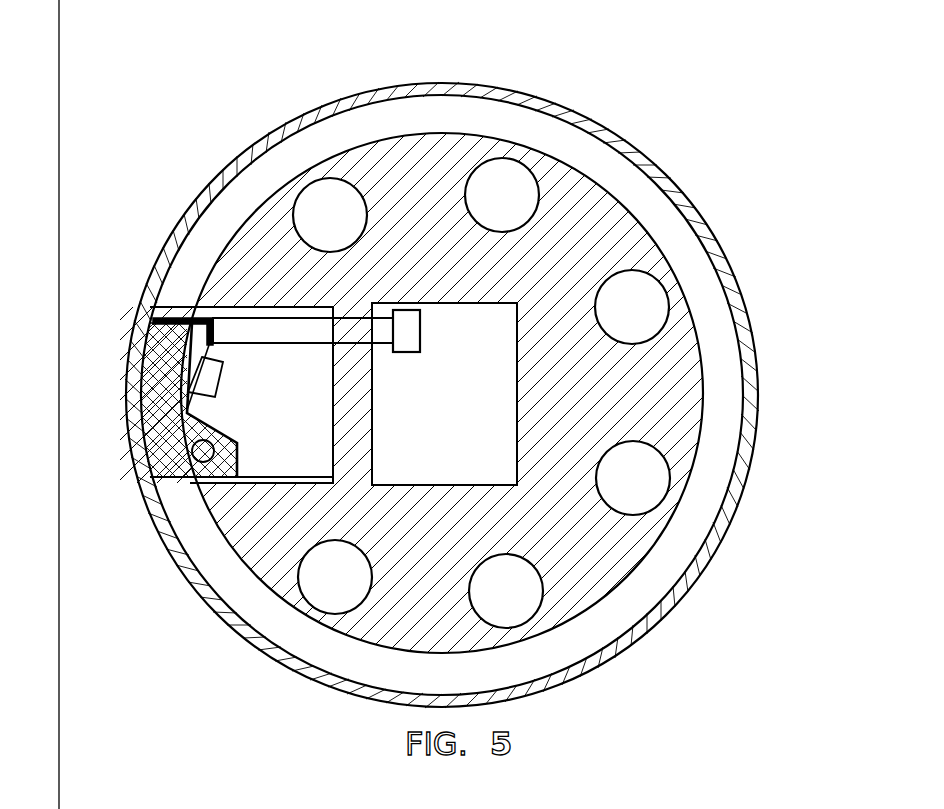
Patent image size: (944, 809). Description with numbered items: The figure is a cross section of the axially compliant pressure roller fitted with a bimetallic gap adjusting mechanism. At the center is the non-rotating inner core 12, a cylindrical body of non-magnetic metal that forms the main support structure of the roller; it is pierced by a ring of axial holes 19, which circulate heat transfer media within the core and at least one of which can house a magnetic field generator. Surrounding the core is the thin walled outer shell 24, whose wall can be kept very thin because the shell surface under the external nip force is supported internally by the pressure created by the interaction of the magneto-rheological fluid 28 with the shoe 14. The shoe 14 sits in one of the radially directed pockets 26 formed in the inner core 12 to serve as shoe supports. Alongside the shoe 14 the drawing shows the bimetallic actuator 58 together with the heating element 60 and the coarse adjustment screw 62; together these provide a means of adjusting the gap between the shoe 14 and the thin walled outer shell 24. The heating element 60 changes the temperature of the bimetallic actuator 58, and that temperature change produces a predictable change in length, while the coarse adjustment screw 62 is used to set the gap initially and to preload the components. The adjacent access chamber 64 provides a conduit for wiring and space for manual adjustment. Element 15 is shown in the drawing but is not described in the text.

The inner core 12 is at (600, 207).
The shoe 14 is at (152, 320).
The pivoting lever 15 is at (196, 462).
The axial holes 19 is at (652, 515).
The thin walled outer shell 24 is at (361, 694).
The pockets 26 is at (292, 452).
The magneto-rheological fluid 28 is at (557, 653).
The bimetallic actuator 58 is at (200, 318).
The heating element 60 is at (200, 320).
The coarse adjustment screw 62 is at (355, 325).
The access chamber 64 is at (444, 394).